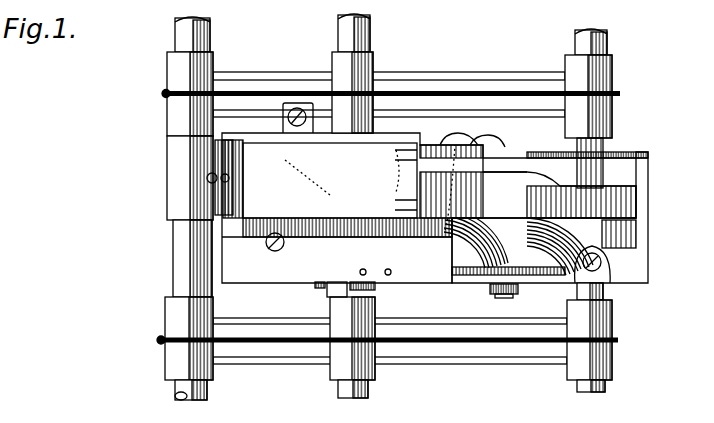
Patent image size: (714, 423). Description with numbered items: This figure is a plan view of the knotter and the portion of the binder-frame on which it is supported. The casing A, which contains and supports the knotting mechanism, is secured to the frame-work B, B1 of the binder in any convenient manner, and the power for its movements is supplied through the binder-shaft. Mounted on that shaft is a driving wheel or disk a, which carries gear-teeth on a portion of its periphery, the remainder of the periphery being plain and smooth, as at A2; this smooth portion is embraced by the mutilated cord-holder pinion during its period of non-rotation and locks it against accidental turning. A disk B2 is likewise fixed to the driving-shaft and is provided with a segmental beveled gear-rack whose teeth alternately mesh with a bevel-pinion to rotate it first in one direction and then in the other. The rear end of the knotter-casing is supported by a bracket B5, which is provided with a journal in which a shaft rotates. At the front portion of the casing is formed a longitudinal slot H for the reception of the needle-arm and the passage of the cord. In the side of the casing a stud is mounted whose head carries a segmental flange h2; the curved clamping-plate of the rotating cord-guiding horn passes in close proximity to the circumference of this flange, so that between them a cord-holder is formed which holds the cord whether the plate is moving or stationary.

The casing A is at (429, 193).
The plain smooth portion of the periphery A2 is at (361, 206).
The frame-work of the binder B is at (500, 78).
The frame-work of the binder B1 is at (174, 274).
The disk B2 is at (582, 45).
The bracket B5 is at (198, 188).
The longitudinal slot H is at (640, 180).
The driving wheel or disk a is at (326, 285).
The segmental flange h2 is at (505, 292).